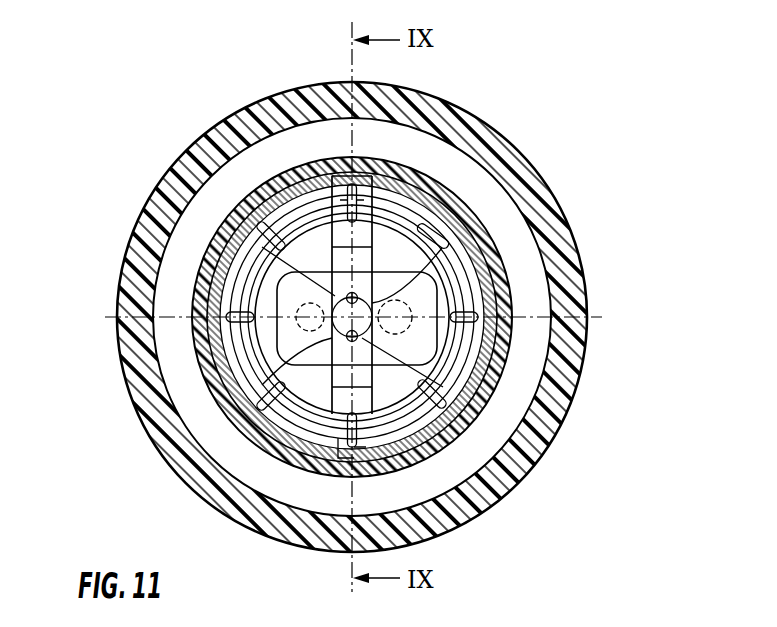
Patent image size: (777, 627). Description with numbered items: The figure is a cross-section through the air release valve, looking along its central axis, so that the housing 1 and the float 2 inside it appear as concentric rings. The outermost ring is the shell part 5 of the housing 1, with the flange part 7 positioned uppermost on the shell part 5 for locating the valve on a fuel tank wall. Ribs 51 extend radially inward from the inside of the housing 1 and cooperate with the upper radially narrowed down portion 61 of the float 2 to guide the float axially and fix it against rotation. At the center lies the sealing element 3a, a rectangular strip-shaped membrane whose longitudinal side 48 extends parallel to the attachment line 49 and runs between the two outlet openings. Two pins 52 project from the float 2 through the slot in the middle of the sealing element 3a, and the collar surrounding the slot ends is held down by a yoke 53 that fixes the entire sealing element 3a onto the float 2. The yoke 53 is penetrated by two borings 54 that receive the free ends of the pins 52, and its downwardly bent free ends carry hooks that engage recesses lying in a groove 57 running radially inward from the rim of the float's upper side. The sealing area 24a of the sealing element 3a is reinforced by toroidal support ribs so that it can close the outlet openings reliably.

The housing 1 is at (112, 261).
The float 2 is at (465, 184).
The sealing element 3a is at (218, 242).
The shell part 5 is at (322, 100).
The flange part 7 is at (245, 322).
The sealing area 24a is at (250, 325).
The longitudinal side 48 is at (283, 290).
The attachment line 49 is at (602, 314).
The ribs 51 is at (285, 410).
The pins 52 is at (357, 297).
The yoke 53 is at (351, 293).
The borings 54 is at (453, 222).
The groove 57 is at (483, 126).
The upper radially narrowed down portion 61 is at (462, 386).